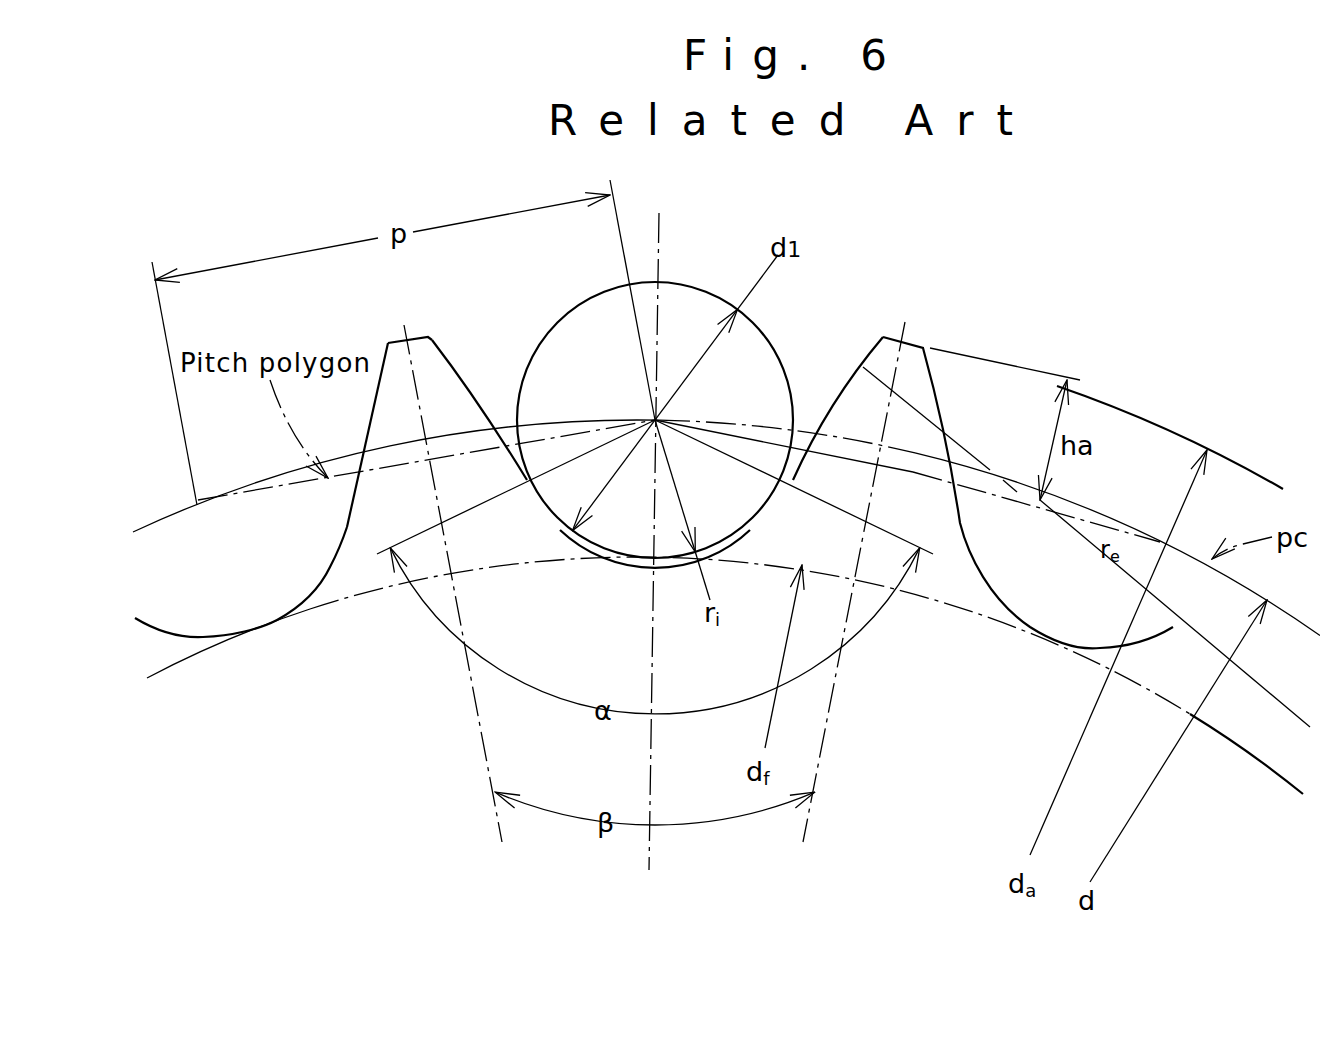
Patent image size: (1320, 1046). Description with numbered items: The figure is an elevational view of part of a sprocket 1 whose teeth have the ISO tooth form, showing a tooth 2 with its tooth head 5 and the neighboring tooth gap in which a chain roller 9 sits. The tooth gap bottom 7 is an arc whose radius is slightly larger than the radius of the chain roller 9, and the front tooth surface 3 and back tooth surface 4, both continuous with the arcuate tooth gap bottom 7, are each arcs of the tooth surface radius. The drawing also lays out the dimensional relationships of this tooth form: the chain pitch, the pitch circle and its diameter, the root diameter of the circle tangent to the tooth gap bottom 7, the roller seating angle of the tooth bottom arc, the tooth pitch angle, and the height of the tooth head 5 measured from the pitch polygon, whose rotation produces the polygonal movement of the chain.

The sprocket 1 is at (654, 447).
The tooth 2 is at (437, 400).
The front tooth surface 3 is at (462, 369).
The back tooth surface 4 is at (846, 385).
The tooth head 5 is at (424, 338).
The tooth gap bottom 7 is at (614, 556).
The chain roller 9 is at (765, 350).